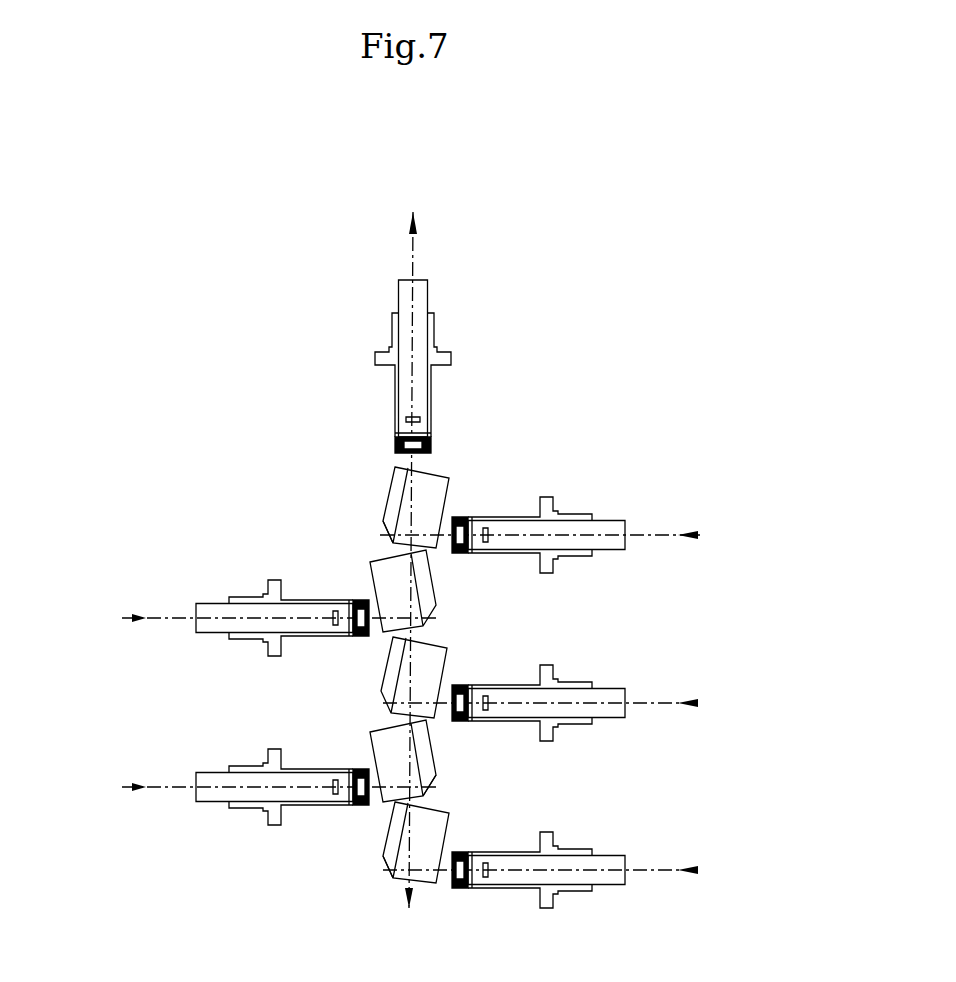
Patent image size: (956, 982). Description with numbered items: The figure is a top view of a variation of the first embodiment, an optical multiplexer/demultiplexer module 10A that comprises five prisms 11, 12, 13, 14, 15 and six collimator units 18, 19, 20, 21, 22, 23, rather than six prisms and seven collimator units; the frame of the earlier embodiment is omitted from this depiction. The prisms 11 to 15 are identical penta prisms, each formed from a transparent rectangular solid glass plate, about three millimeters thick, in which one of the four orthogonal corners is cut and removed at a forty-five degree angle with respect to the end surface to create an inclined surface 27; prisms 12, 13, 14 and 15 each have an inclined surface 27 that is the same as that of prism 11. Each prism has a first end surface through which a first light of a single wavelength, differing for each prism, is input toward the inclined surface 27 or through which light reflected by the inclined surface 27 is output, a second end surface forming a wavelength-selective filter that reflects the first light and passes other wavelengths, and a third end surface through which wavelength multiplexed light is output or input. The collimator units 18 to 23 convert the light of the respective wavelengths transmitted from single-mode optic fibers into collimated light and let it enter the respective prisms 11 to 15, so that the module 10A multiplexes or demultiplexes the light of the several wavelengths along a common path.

The optical multiplexer/demultiplexer module 10A is at (567, 377).
The prism 11 is at (427, 880).
The prism 12 is at (388, 736).
The prism 13 is at (452, 646).
The prism 14 is at (372, 563).
The prism 15 is at (444, 478).
The collimator unit 18 is at (562, 896).
The collimator unit 19 is at (255, 765).
The collimator unit 20 is at (562, 728).
The collimator unit 21 is at (243, 593).
The collimator unit 22 is at (564, 564).
The collimator unit 23 is at (395, 383).
The inclined surface 27 is at (387, 523).